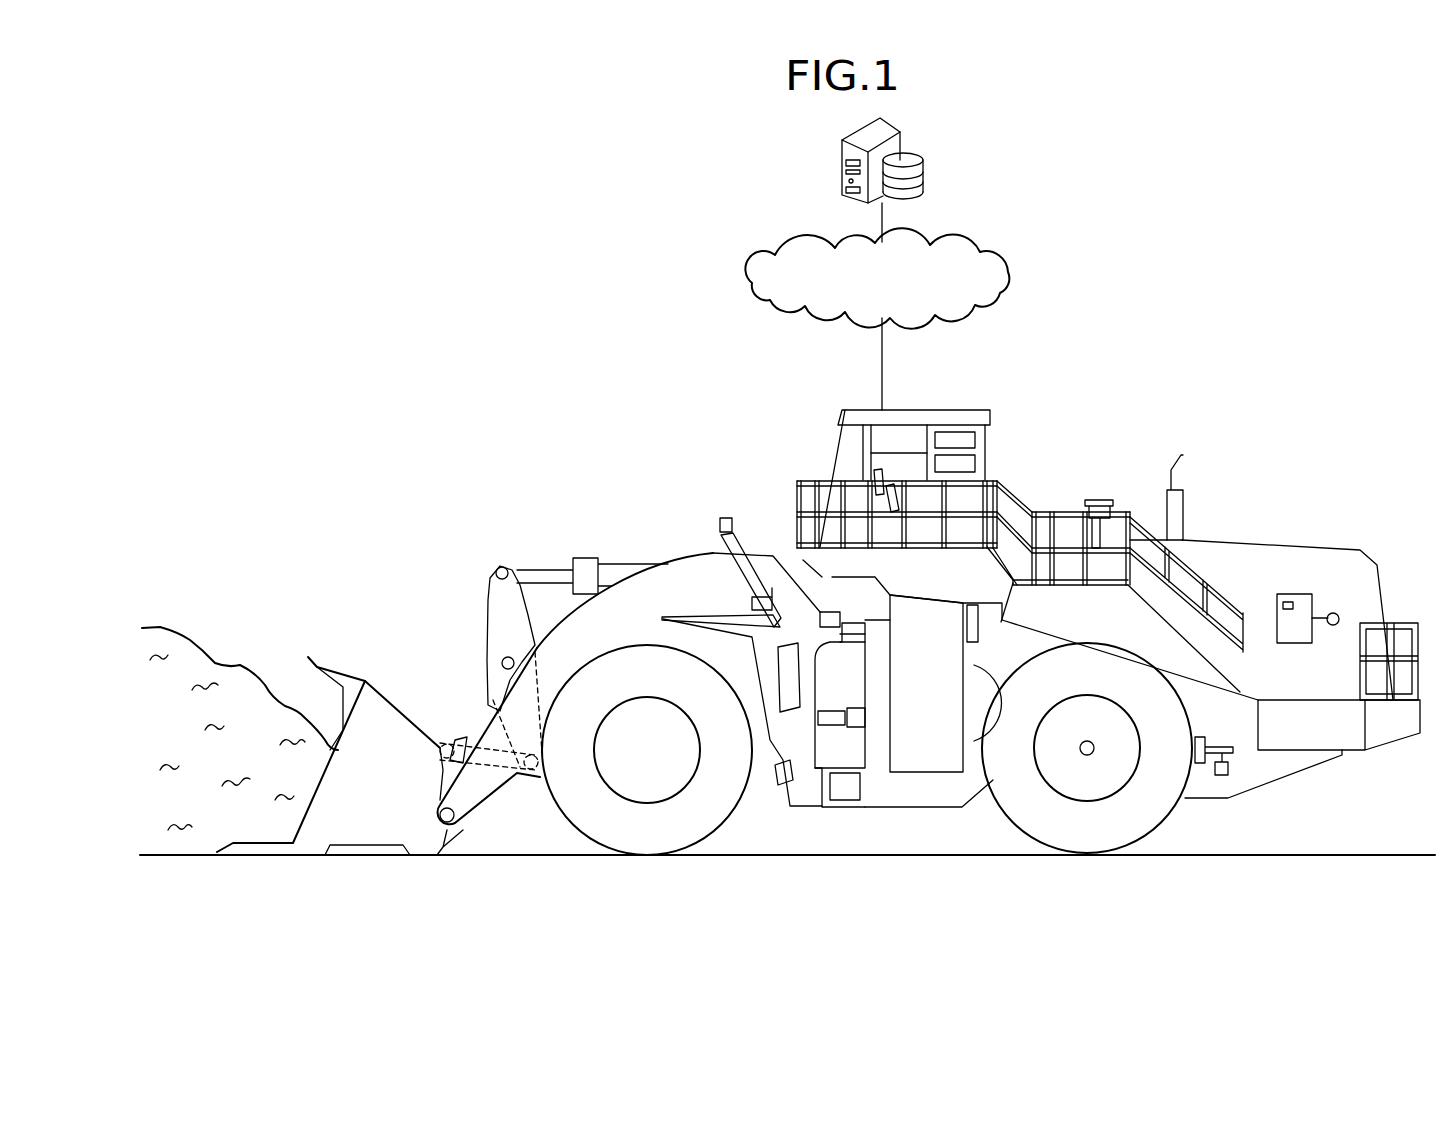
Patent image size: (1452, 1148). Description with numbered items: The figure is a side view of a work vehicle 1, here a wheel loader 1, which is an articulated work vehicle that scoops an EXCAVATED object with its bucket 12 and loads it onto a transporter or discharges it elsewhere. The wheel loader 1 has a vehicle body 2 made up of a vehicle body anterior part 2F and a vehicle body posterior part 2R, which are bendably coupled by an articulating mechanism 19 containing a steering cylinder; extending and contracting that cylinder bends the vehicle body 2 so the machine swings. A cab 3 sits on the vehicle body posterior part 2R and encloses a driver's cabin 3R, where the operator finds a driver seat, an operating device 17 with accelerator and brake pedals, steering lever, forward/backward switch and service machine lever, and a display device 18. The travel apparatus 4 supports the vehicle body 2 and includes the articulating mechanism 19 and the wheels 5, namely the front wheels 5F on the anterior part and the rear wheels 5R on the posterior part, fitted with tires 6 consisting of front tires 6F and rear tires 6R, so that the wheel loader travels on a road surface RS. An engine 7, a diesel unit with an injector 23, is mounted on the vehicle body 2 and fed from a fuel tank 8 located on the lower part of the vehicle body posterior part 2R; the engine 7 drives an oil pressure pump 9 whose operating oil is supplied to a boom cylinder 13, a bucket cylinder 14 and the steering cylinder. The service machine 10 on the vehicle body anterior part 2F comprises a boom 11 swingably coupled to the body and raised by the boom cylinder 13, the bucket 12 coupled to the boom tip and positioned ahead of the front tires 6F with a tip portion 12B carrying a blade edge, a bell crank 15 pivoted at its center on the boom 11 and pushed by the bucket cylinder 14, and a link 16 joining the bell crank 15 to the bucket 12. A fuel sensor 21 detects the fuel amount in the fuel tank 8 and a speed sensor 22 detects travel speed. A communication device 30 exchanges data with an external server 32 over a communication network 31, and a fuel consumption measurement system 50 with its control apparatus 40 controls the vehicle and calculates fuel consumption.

The work vehicle 1 is at (1172, 362).
The vehicle body 2 is at (907, 898).
The vehicle body anterior part 2F is at (826, 790).
The vehicle body posterior part 2R is at (913, 788).
The cab 3 is at (953, 410).
The driver's cabin 3R is at (909, 458).
The travel apparatus 4 is at (1210, 823).
The wheels 5 is at (878, 807).
The front wheels 5F is at (670, 777).
The rear wheels 5R is at (1115, 775).
The tires 6 is at (867, 781).
The front tires 6F is at (575, 838).
The rear tires 6R is at (1020, 838).
The engine 7 is at (1303, 632).
The fuel tank 8 is at (1303, 758).
The oil pressure pump 9 is at (1334, 612).
The service machine 10 is at (440, 594).
The boom 11 is at (470, 694).
The bucket 12 is at (398, 717).
The tip portion 12B is at (220, 852).
The boom cylinder 13 is at (805, 792).
The bucket cylinder 14 is at (628, 583).
The bell crank 15 is at (500, 627).
The link 16 is at (463, 744).
The operating device 17 is at (890, 484).
The display device 18 is at (874, 472).
The articulating mechanism 19 is at (838, 612).
The fuel sensor 21 is at (1231, 768).
The speed sensor 22 is at (1085, 756).
The injector 23 is at (1287, 612).
The communication device 30 is at (977, 440).
The communication network 31 is at (1008, 262).
The server 32 is at (902, 138).
The control apparatus 40 is at (977, 463).
The fuel consumption measurement system 50 is at (1061, 406).
The road surface RS is at (1407, 853).
The excavated object EXCAVATED is at (185, 657).